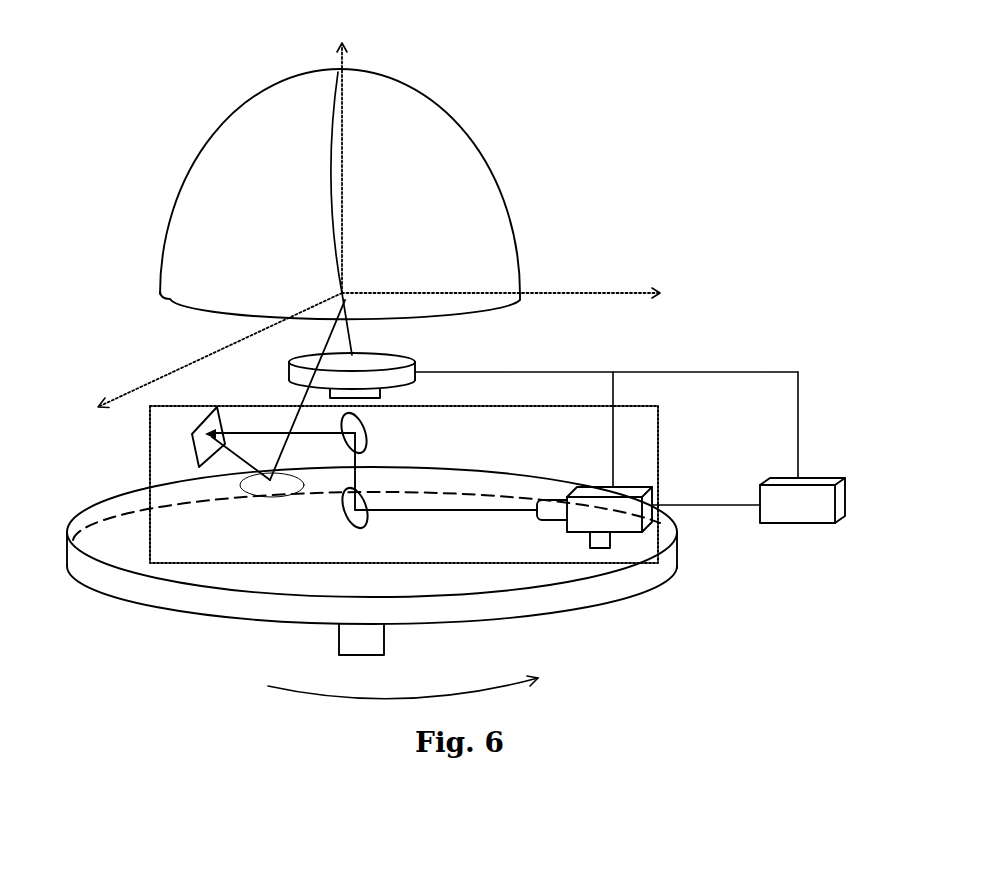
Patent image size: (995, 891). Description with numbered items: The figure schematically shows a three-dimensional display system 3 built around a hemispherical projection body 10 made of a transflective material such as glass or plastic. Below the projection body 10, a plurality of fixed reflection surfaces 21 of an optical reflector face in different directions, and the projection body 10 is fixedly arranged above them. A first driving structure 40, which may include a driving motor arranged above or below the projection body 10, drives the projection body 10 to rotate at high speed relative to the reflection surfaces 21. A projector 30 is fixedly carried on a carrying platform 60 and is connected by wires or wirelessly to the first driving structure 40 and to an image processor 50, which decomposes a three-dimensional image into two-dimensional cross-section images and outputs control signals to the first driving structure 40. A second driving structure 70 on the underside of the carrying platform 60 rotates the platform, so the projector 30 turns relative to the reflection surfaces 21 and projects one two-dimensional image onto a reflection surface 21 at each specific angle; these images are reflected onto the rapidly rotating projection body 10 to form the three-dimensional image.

The three-dimensional display system 3 is at (90, 57).
The projection body 10 is at (442, 173).
The reflection surface 21 is at (200, 440).
The projector 30 is at (612, 532).
The first driving structure 40 is at (313, 360).
The image processor 50 is at (795, 515).
The carrying platform 60 is at (93, 578).
The second driving structure 70 is at (350, 640).